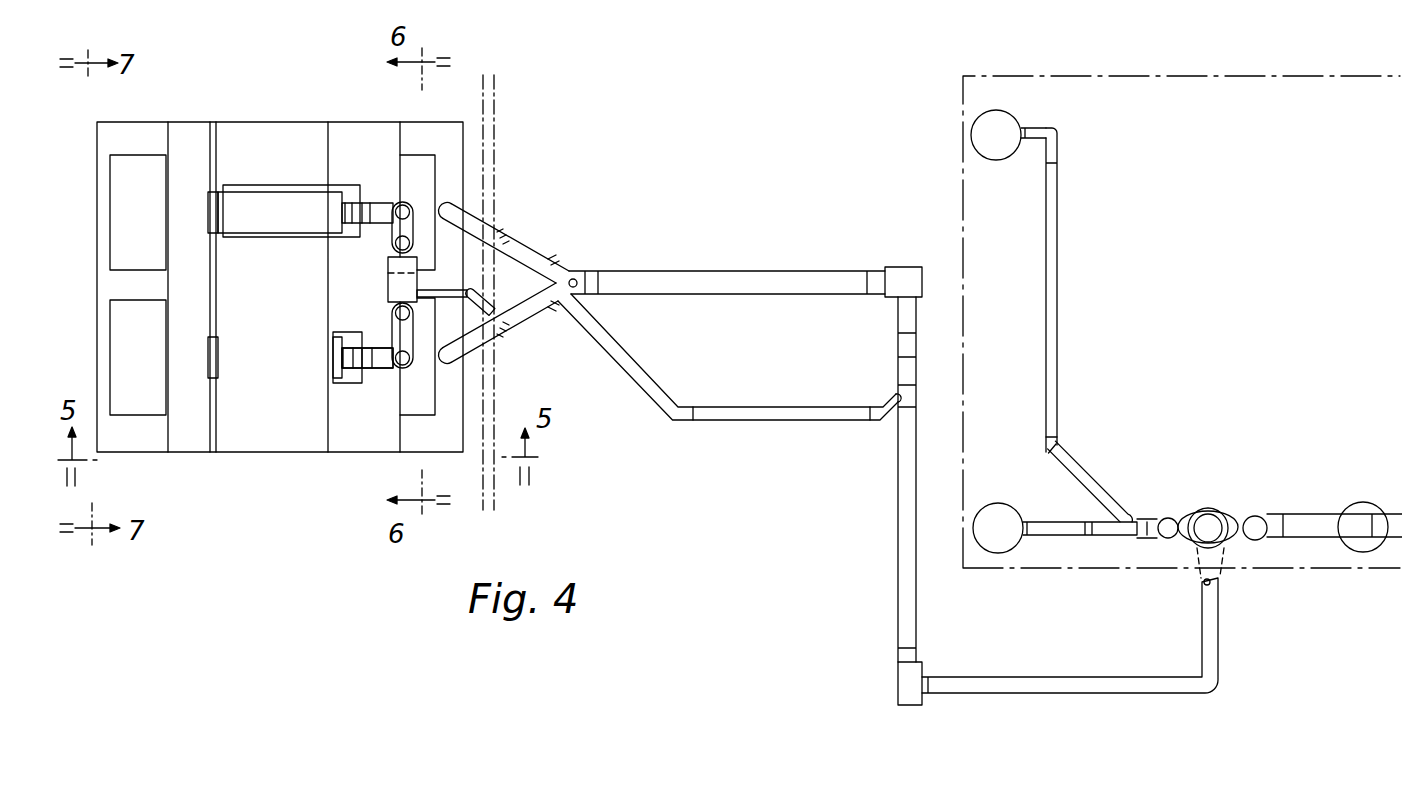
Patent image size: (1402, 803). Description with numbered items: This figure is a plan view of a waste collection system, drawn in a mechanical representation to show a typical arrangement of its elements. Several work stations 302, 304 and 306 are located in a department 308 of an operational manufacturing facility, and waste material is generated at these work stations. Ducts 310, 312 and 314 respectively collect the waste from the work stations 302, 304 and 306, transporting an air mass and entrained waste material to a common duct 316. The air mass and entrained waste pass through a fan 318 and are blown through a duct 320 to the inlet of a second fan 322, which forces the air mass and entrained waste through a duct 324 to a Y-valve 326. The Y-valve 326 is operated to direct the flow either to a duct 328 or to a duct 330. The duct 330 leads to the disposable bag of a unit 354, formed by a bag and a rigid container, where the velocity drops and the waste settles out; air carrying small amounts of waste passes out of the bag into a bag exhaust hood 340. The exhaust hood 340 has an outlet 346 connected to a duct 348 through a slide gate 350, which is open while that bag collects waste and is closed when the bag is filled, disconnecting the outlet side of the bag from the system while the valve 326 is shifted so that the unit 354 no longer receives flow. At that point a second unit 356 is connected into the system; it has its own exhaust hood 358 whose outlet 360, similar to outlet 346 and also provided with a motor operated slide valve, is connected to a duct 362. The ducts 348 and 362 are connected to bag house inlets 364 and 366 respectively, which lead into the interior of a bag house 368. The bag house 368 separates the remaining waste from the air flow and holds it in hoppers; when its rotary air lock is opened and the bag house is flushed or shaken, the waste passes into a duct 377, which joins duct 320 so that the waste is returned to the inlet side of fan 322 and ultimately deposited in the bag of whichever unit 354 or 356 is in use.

The work station 302 is at (1358, 503).
The work station 304 is at (1005, 510).
The work station 306 is at (1007, 122).
The department 308 is at (1168, 75).
The duct 310 is at (1318, 513).
The duct 312 is at (1068, 530).
The duct 314 is at (1058, 274).
The common duct 316 is at (1133, 677).
The fan 318 is at (912, 705).
The duct 320 is at (905, 565).
The fan 322 is at (905, 267).
The duct 324 is at (782, 271).
The Y-valve 326 is at (578, 280).
The duct 328 is at (530, 250).
The duct 330 is at (525, 318).
The bag exhaust hood 340 is at (333, 343).
The outlet 346 is at (348, 368).
The duct 348 is at (402, 360).
The slide gate 350 is at (347, 358).
The unit 354 is at (150, 407).
The unit 356 is at (140, 160).
The exhaust hood 358 is at (336, 195).
The outlet 360 is at (342, 213).
The duct 362 is at (391, 214).
The bag house inlet 364 is at (352, 291).
The bag house inlet 366 is at (386, 273).
The bag house 368 is at (273, 440).
The duct 377 is at (817, 420).